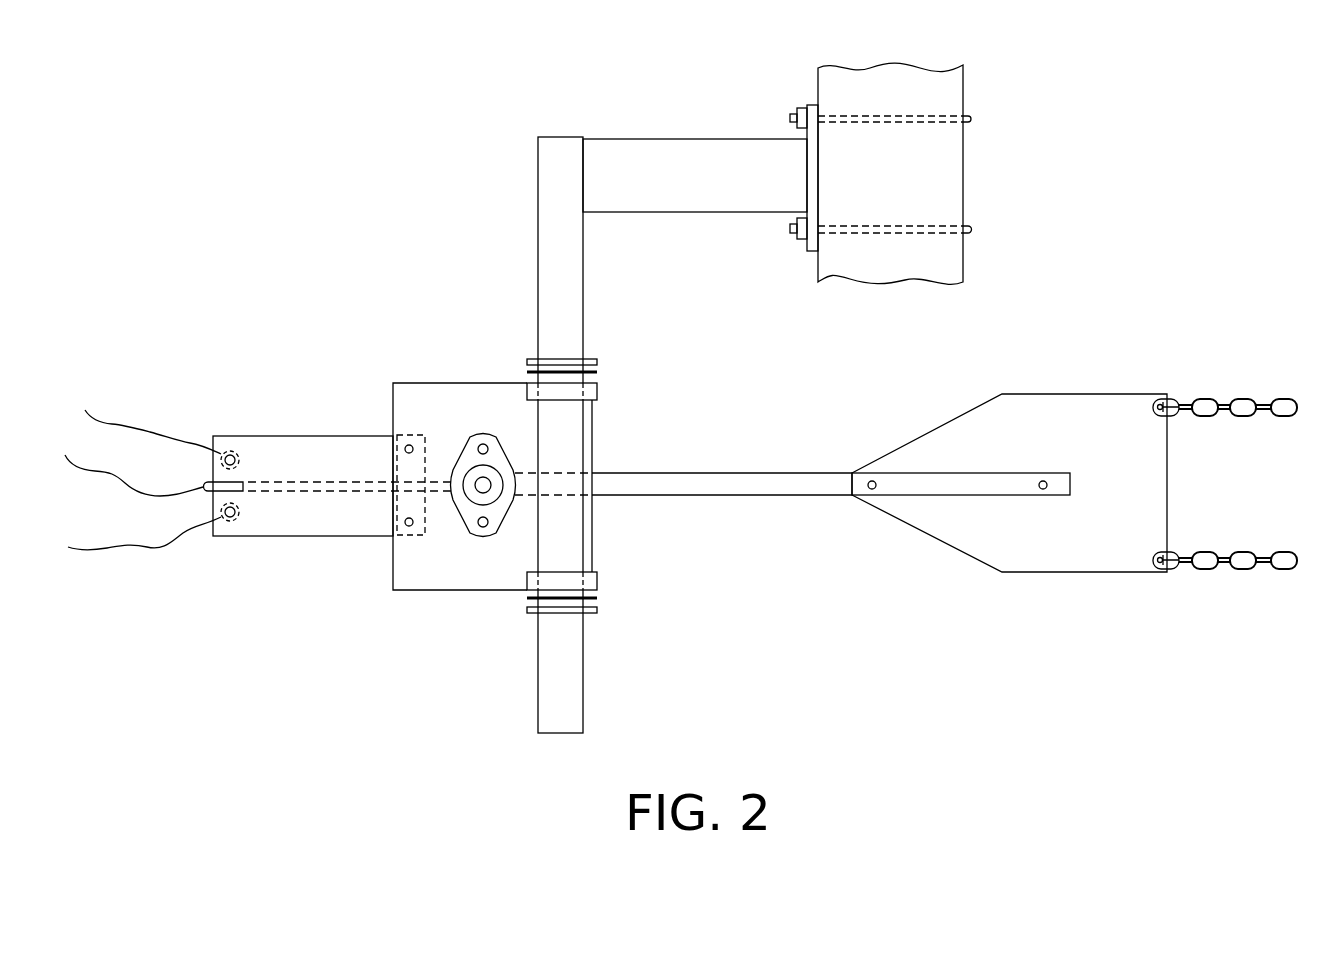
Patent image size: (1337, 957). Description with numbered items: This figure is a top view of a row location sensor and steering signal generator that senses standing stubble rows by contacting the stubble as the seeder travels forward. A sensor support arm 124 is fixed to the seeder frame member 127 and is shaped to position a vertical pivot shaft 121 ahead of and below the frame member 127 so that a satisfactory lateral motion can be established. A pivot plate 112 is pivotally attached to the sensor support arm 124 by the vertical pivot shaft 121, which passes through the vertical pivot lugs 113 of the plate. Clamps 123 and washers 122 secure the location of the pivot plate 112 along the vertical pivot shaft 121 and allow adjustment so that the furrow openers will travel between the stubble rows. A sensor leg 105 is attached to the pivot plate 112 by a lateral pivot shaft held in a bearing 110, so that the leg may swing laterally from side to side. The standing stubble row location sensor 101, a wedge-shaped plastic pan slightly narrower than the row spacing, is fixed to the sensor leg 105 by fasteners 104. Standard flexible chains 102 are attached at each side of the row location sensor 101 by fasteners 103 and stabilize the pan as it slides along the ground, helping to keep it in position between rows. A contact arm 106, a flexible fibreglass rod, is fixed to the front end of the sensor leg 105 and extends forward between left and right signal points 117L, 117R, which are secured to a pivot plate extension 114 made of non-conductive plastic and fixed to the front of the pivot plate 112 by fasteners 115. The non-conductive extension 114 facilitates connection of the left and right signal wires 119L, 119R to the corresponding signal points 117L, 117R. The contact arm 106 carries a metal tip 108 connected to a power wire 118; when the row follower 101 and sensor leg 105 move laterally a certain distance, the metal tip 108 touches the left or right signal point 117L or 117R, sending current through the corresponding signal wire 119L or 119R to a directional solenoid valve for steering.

The standing stubble row location sensor 101 is at (1030, 577).
The flexible chains 102 is at (1215, 399).
The fasteners 103 is at (1158, 401).
The fasteners 104 is at (871, 480).
The sensor leg 105 is at (739, 469).
The contact arm 106 is at (318, 502).
The metal tip 108 is at (196, 471).
The bearing 110 is at (458, 517).
The pivot plate 112 is at (413, 378).
The vertical pivot lugs 113 is at (598, 393).
The pivot plate extension 114 is at (290, 432).
The fasteners 115 is at (412, 437).
The right signal point 117R is at (231, 454).
The left signal point 117L is at (236, 520).
The power wire 118 is at (108, 473).
The right signal wire 119R is at (115, 422).
The left signal wire 119L is at (148, 548).
The vertical pivot shaft 121 is at (583, 272).
The washers 122 is at (598, 373).
The clamps 123 is at (598, 363).
The sensor support arm 124 is at (633, 137).
The seeder frame member 127 is at (963, 89).